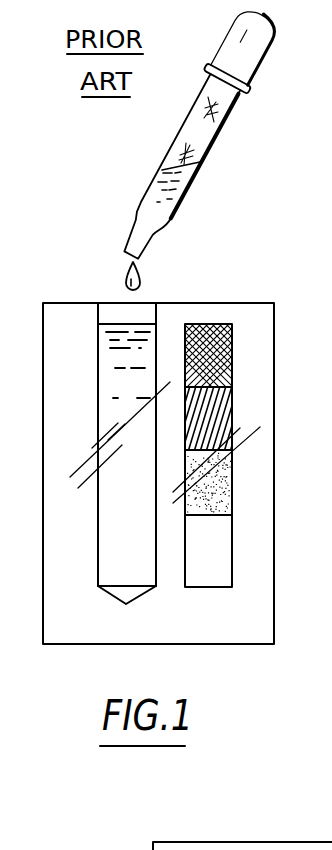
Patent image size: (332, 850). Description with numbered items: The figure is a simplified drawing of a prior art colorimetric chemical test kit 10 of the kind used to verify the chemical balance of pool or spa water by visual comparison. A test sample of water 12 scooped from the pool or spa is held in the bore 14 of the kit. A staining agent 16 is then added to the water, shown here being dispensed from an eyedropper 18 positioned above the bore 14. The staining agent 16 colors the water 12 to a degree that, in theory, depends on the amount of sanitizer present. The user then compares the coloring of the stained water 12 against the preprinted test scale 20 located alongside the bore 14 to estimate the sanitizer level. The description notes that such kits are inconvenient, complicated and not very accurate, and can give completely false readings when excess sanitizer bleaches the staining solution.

The colorimetric chemical test kit 10 is at (258, 291).
The test sample of water 12 is at (112, 380).
The bore 14 is at (144, 313).
The staining agent 16 is at (141, 281).
The eyedropper 18 is at (201, 164).
The preprinted test scale 20 is at (242, 420).